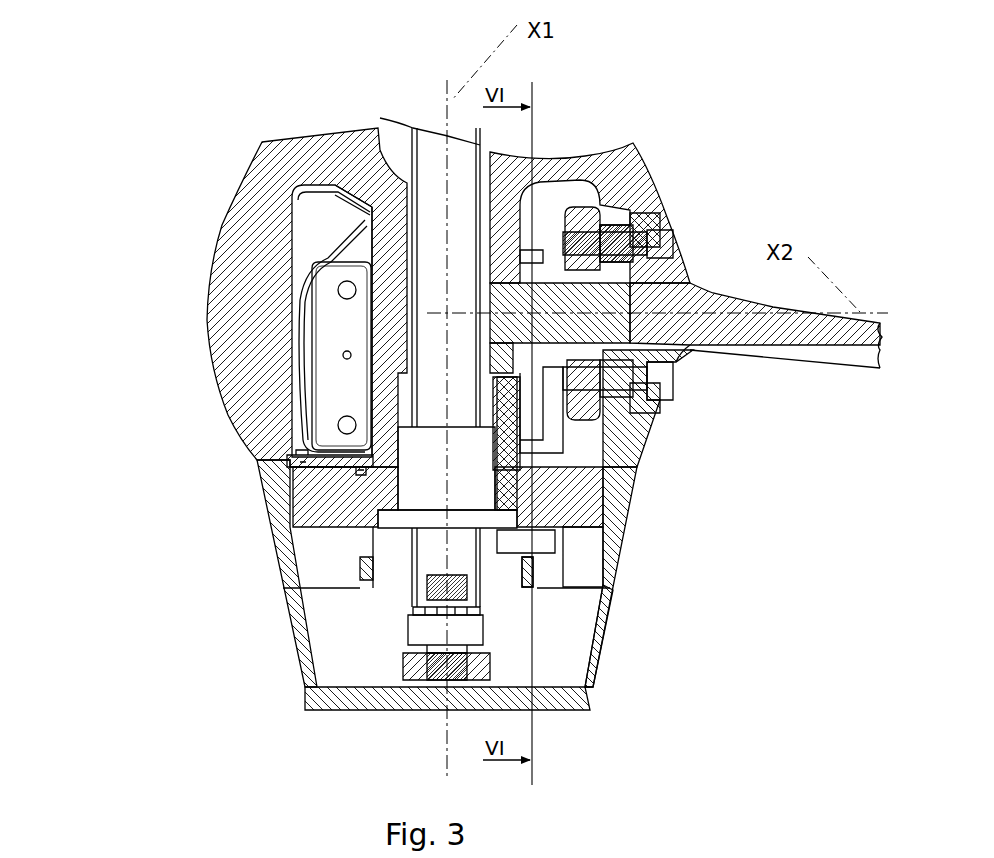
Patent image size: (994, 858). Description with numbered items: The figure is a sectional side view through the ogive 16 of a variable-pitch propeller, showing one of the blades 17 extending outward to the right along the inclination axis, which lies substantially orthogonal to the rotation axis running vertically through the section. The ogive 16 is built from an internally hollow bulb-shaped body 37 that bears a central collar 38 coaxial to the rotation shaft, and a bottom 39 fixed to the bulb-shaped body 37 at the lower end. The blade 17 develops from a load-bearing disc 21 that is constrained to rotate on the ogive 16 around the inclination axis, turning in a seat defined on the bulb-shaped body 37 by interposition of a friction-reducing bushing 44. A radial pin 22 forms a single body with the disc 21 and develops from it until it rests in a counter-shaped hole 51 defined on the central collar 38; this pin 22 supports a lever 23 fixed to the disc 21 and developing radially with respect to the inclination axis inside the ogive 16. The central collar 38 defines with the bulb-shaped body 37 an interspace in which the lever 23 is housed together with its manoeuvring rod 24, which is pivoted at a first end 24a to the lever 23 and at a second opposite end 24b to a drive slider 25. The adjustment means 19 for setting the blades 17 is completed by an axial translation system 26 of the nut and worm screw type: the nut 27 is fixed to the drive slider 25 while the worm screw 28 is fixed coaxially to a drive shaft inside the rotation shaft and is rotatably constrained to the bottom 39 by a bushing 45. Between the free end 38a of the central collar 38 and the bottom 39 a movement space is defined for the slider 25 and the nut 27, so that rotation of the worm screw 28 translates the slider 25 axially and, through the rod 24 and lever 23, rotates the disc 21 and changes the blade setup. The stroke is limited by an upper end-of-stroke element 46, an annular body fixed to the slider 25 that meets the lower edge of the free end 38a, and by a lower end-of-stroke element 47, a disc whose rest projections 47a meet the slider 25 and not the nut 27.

The ogive 16 is at (205, 352).
The blade 17 is at (743, 375).
The adjustment means 19 is at (301, 594).
The load-bearing disc 21 is at (367, 210).
The pin 22 is at (623, 327).
The lever 23 is at (343, 215).
The manoeuvring rod 24 is at (343, 325).
The first end 24a is at (340, 257).
The second end 24b is at (340, 433).
The drive slider 25 is at (605, 509).
The axial translation system 26 is at (411, 160).
The nut 27 is at (430, 470).
The worm screw 28 is at (455, 157).
The bulb-shaped body 37 is at (237, 280).
The central collar 38 is at (387, 323).
The free end 38a is at (337, 437).
The bottom 39 is at (602, 637).
The bushing 44 is at (637, 215).
The bushing 45 is at (423, 673).
The upper end-of-stroke element 46 is at (507, 417).
The lower end-of-stroke element 47 is at (305, 685).
The rest projection 47a is at (368, 608).
The counter-shaped hole 51 is at (562, 187).